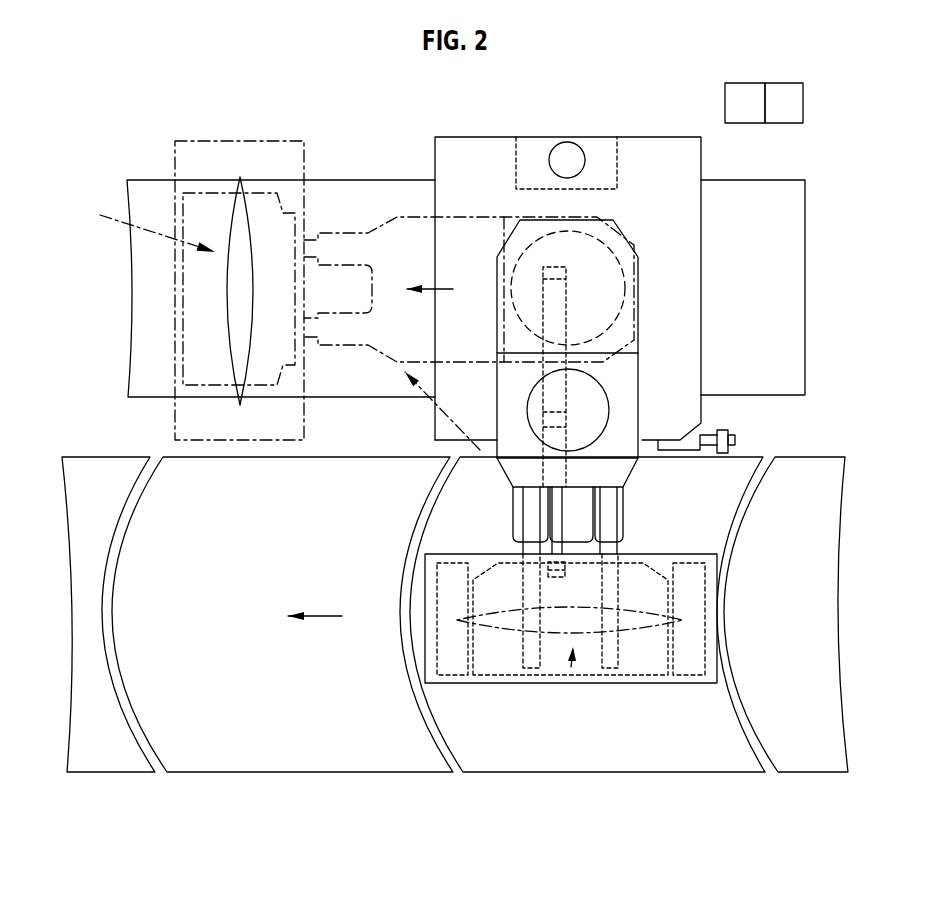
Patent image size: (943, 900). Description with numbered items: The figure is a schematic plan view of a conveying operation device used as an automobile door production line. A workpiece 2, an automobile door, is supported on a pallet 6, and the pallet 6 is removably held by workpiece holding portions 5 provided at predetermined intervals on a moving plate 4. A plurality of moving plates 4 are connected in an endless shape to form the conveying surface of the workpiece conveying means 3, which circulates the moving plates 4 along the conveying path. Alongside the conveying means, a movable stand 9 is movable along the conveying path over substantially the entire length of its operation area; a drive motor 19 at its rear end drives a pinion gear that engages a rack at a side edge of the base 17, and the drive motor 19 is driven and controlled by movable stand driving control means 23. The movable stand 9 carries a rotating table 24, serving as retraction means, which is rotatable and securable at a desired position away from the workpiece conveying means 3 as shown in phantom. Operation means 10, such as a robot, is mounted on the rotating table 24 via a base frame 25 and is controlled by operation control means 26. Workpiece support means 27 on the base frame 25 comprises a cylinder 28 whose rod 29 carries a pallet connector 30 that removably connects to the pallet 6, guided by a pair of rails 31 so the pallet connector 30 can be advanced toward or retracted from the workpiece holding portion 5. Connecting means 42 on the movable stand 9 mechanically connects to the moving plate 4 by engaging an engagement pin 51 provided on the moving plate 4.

The workpiece 2 is at (253, 282).
The workpiece conveying means 3 is at (455, 666).
The moving plate 4 is at (108, 760).
The workpiece holding portion 5 is at (457, 665).
The pallet 6 is at (262, 141).
The movable stand 9 is at (465, 137).
The operation means 10 is at (595, 400).
The base 17 is at (756, 195).
The drive motor 19 is at (565, 150).
The movable stand driving control means 23 is at (741, 88).
The rotating table 24 is at (612, 272).
The base frame 25 is at (410, 213).
The operation control means 26 is at (780, 88).
The workpiece support means 27 is at (563, 707).
The cylinder 28 is at (566, 295).
The rod 29 is at (562, 502).
The pallet connector 30 is at (193, 318).
The rail 31 is at (610, 525).
The connecting means 42 is at (714, 419).
The engagement pin 51 is at (728, 432).